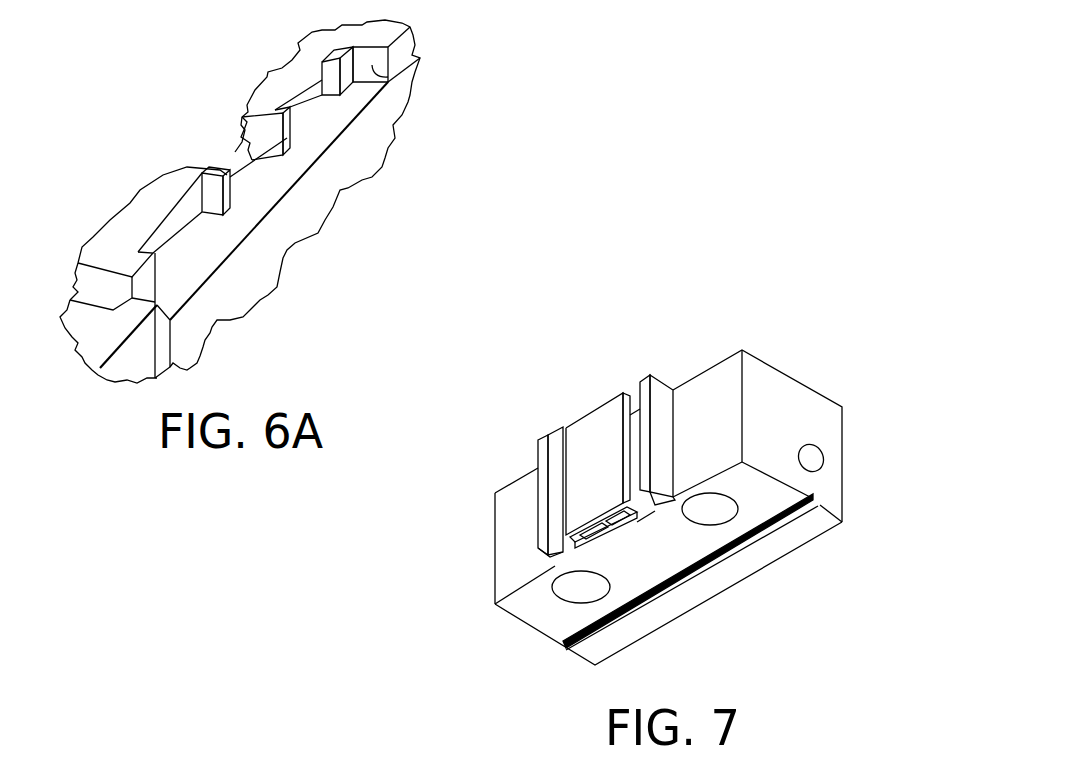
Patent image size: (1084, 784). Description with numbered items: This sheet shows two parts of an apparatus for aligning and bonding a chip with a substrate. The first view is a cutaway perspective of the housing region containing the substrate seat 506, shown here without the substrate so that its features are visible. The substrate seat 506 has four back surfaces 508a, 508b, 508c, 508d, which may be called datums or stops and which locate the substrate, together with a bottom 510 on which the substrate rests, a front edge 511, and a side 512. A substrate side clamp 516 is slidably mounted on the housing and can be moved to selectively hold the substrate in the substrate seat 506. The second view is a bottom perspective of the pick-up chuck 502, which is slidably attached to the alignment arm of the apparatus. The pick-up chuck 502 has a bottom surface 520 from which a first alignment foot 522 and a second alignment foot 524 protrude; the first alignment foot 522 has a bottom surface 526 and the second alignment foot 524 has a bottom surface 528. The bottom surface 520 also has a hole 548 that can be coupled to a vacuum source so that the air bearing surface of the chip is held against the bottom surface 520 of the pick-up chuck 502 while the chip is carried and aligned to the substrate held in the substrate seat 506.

In FIG. 7, the pick-up chuck 502 is at (713, 388).
In FIG. 6A, the substrate seat 506 is at (452, 43).
In FIG. 6A, the back surface 508a is at (142, 280).
In FIG. 6A, the back surface 508b is at (223, 198).
In FIG. 6A, the back surface 508c is at (288, 133).
In FIG. 6A, the back surface 508d is at (350, 80).
In FIG. 6A, the bottom 510 is at (268, 198).
In FIG. 6A, the front edge 511 is at (230, 197).
In FIG. 6A, the side 512 is at (343, 82).
In FIG. 6A, the substrate side clamp 516 is at (98, 337).
In FIG. 7, the bottom surface 520 is at (628, 527).
In FIG. 7, the first alignment foot 522 is at (537, 518).
In FIG. 7, the second alignment foot 524 is at (643, 392).
In FIG. 7, the bottom surface 526 is at (552, 568).
In FIG. 7, the bottom surface 528 is at (665, 513).
In FIG. 7, the hole 548 is at (608, 535).